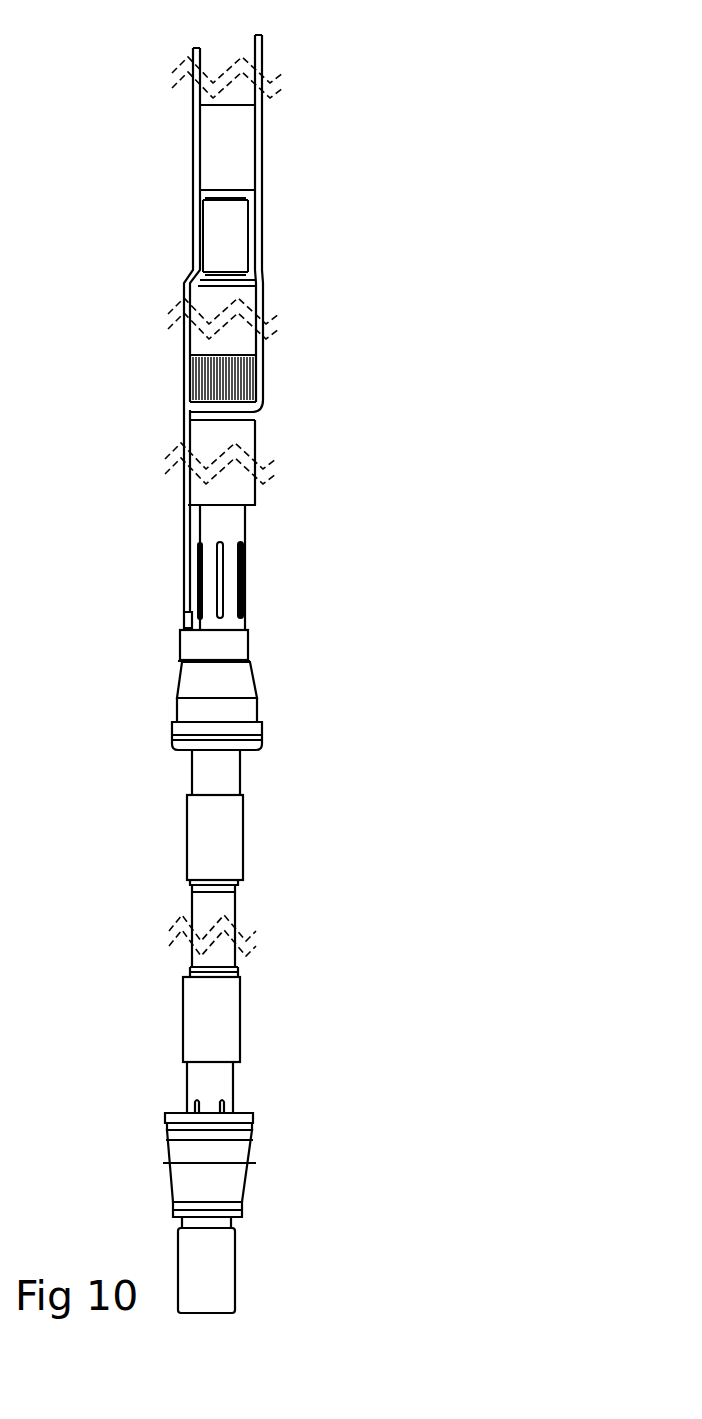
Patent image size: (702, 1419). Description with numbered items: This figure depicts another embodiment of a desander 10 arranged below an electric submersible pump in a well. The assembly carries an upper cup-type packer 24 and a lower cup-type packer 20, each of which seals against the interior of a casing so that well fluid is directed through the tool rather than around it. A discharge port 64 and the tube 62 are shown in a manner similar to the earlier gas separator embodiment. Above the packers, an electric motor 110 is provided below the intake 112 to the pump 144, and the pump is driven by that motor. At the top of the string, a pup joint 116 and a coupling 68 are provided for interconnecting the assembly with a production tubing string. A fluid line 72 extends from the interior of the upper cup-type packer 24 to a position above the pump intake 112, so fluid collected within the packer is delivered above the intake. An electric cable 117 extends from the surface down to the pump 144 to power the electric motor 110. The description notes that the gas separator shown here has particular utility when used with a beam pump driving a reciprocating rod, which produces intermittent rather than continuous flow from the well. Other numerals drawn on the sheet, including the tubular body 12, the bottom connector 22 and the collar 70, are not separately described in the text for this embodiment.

The desander 10 is at (312, 1094).
The tubular body 12 is at (227, 905).
The lower cup-type packer 20 is at (233, 1150).
The bottom connector 22 is at (218, 1270).
The upper cup-type packer 24 is at (242, 690).
The tube 62 is at (212, 523).
The discharge port 64 is at (223, 560).
The coupling 68 is at (233, 142).
The collar 70 is at (230, 1003).
The fluid line 72 is at (193, 55).
The electric motor 110 is at (240, 438).
The pump intake 112 is at (253, 380).
The pup joint 116 is at (218, 223).
The electric cable 117 is at (255, 240).
The pump 144 is at (248, 295).